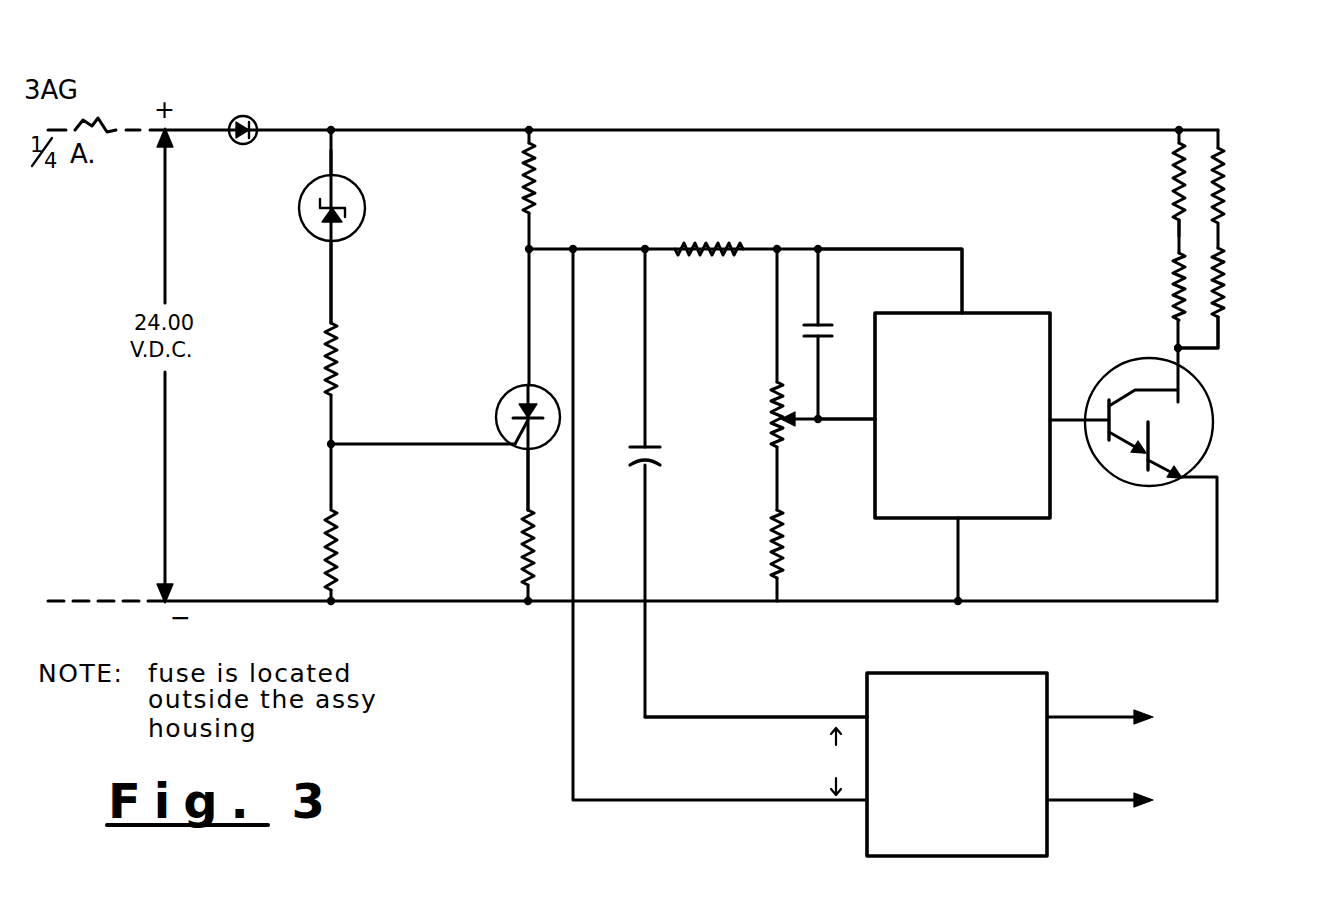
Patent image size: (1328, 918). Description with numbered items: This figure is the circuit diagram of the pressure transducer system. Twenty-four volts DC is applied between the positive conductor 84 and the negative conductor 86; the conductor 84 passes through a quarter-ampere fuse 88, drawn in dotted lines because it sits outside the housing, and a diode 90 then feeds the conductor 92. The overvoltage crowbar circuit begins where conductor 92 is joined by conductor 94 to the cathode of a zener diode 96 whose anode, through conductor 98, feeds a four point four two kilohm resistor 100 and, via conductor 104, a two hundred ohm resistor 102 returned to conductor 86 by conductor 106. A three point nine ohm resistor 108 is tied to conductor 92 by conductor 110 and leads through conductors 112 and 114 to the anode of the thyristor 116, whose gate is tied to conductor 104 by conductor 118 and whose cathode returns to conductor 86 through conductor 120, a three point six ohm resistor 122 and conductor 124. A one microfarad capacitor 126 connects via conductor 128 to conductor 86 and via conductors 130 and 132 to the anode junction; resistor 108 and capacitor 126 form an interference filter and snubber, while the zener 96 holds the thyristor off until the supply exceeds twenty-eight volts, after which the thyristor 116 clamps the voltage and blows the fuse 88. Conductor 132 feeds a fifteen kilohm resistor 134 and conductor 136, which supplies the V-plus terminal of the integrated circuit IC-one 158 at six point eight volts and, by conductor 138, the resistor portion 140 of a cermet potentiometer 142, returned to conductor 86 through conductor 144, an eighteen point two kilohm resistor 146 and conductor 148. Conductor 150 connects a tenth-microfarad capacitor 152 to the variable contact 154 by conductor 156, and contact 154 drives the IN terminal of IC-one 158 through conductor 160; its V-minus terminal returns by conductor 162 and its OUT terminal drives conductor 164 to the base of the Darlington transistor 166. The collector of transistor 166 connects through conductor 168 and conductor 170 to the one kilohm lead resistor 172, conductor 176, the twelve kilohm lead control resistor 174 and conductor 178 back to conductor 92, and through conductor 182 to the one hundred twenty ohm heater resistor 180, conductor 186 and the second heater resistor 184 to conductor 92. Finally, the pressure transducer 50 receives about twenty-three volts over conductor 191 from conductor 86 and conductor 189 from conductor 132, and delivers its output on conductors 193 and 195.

The pressure transducer 50 is at (1022, 672).
The positive conductor 84 is at (178, 128).
The negative conductor 86 is at (296, 603).
The fuse 88 is at (107, 124).
The diode 90 is at (272, 112).
The conductor 92 is at (478, 110).
The conductor 94 is at (333, 168).
The zener diode 96 is at (364, 198).
The conductor 98 is at (333, 290).
The resistor 100 is at (320, 392).
The resistor 102 is at (340, 528).
The conductor 104 is at (338, 436).
The conductor 106 is at (340, 586).
The resistor 108 is at (520, 190).
The conductor 110 is at (533, 140).
The conductor 112 is at (532, 226).
The conductor 114 is at (526, 283).
The thyristor 116 is at (503, 394).
The conductor 118 is at (430, 446).
The conductor 120 is at (522, 495).
The resistor 122 is at (520, 538).
The conductor 124 is at (520, 590).
The capacitor 126 is at (652, 442).
The conductor 128 is at (648, 545).
The conductor 130 is at (647, 362).
The conductor 132 is at (600, 249).
The resistor 134 is at (712, 244).
The conductor 136 is at (858, 248).
The conductor 138 is at (778, 322).
The resistor portion 140 is at (770, 420).
The cermet potentiometer 142 is at (786, 457).
The conductor 144 is at (771, 486).
The resistor 146 is at (786, 530).
The conductor 148 is at (782, 586).
The conductor 150 is at (820, 276).
The capacitor 152 is at (826, 330).
The variable contact 154 is at (800, 428).
The conductor 156 is at (840, 388).
The integrated circuit assembly IC-1 158 is at (978, 310).
The conductor 160 is at (838, 422).
The conductor 162 is at (960, 568).
The conductor 164 is at (1066, 418).
The Darlington transistor 166 is at (1092, 480).
The conductor 168 is at (1172, 312).
The conductor 170 is at (1170, 346).
The lead resistor 172 is at (1172, 266).
The lead control resistor 174 is at (1170, 162).
The conductor 176 is at (1172, 236).
The conductor 178 is at (1170, 136).
The heater resistor 180 is at (1226, 278).
The conductor 182 is at (1222, 344).
The heater resistor 184 is at (1222, 146).
The conductor 186 is at (1222, 236).
The conductor 189 is at (695, 802).
The conductor 191 is at (708, 695).
The conductor 193 is at (1082, 716).
The conductor 195 is at (1104, 802).